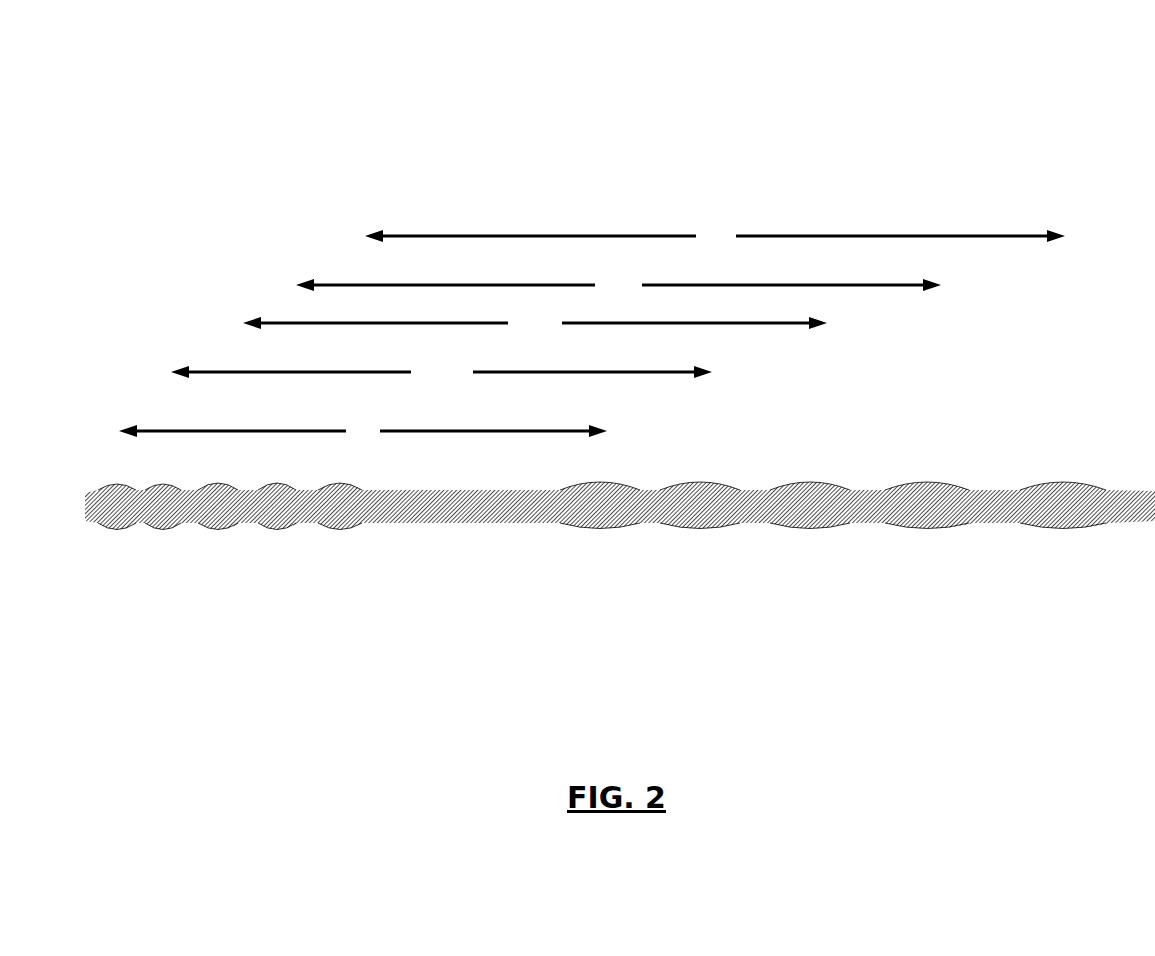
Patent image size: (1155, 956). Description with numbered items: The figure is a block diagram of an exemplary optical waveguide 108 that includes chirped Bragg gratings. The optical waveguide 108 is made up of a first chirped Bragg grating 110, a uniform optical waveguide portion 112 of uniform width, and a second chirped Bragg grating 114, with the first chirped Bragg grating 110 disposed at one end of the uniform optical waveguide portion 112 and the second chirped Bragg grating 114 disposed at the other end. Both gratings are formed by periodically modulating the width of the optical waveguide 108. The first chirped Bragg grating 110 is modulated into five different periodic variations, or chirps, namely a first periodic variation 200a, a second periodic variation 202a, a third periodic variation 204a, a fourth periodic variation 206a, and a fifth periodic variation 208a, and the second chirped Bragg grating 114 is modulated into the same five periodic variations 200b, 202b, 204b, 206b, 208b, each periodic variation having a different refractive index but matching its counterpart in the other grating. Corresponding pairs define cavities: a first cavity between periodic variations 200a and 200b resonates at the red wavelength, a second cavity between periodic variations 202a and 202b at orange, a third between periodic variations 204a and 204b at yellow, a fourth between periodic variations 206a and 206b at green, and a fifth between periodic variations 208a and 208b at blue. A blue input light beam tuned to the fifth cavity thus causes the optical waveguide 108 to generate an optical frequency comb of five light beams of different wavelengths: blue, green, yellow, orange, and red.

The optical waveguide 108 is at (985, 168).
The first chirped Bragg grating 110 is at (214, 633).
The uniform optical waveguide portion 112 is at (462, 546).
The second chirped Bragg grating 114 is at (903, 631).
The first periodic variation 200a is at (120, 523).
The second periodic variation 202a is at (165, 523).
The third periodic variation 204a is at (228, 523).
The fourth periodic variation 206a is at (287, 523).
The fifth periodic variation 208a is at (345, 523).
The first periodic variation 200b is at (606, 523).
The second periodic variation 202b is at (714, 523).
The third periodic variation 204b is at (822, 523).
The fourth periodic variation 206b is at (937, 523).
The fifth periodic variation 208b is at (1076, 522).